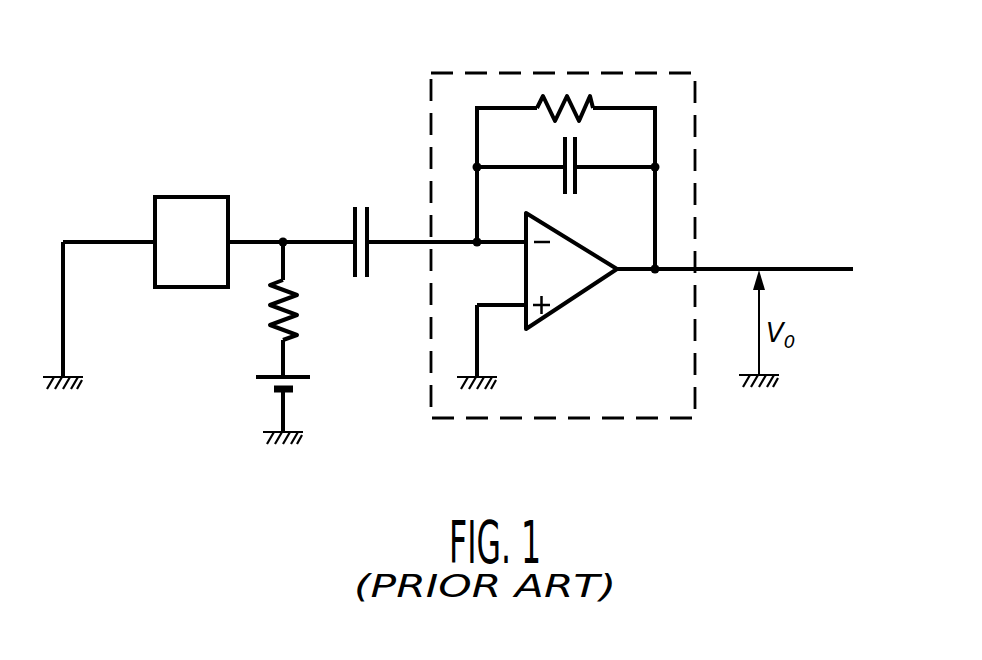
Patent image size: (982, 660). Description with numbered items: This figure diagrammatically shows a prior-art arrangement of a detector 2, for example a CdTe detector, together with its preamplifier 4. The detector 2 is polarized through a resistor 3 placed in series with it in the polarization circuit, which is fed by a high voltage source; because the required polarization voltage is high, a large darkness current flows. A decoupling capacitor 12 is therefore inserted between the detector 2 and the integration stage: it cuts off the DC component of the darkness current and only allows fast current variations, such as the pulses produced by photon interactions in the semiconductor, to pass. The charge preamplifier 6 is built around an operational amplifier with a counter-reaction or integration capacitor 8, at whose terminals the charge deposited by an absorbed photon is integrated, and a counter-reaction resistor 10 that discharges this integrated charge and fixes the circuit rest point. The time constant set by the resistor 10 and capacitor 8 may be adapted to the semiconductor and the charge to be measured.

The detector 2 is at (176, 205).
The decoupling capacitor 12 is at (352, 210).
The polarization resistor 3 is at (298, 318).
The preamplifier 4 is at (697, 142).
The integration capacitor 8 is at (562, 152).
The counter-reaction resistor 10 is at (587, 100).
The charge preamplifier 6 is at (574, 277).